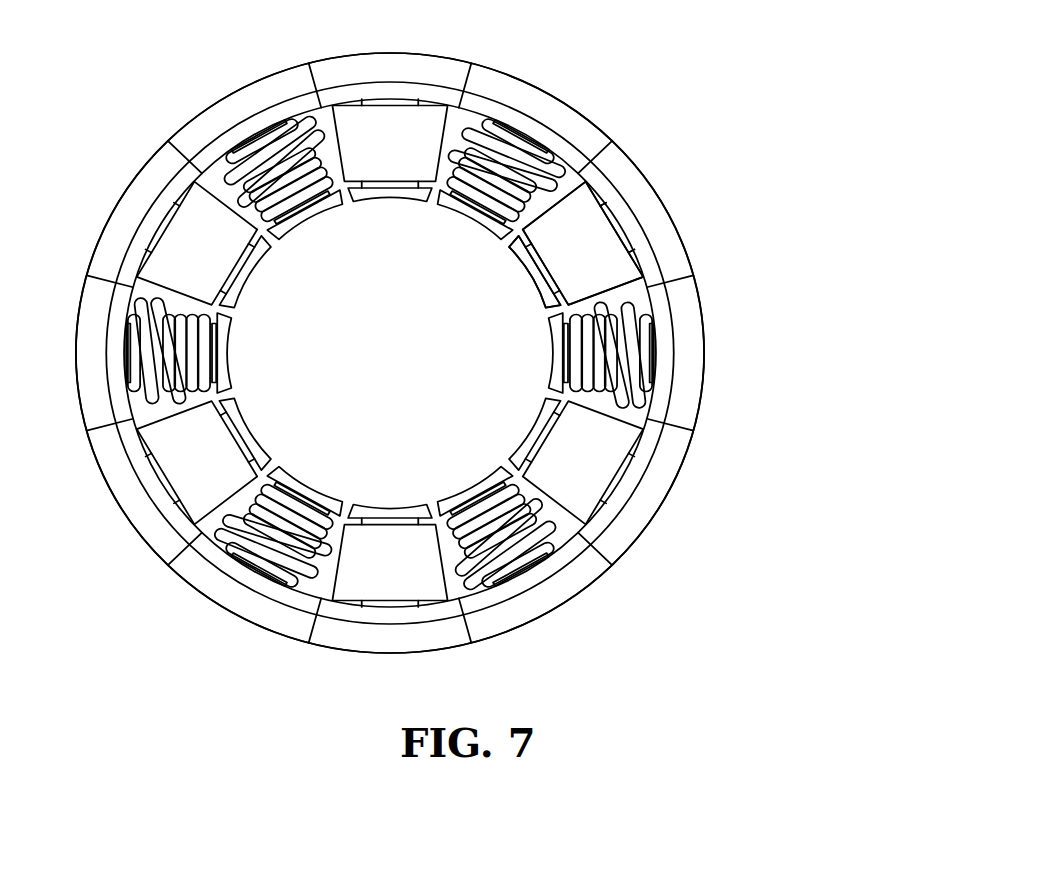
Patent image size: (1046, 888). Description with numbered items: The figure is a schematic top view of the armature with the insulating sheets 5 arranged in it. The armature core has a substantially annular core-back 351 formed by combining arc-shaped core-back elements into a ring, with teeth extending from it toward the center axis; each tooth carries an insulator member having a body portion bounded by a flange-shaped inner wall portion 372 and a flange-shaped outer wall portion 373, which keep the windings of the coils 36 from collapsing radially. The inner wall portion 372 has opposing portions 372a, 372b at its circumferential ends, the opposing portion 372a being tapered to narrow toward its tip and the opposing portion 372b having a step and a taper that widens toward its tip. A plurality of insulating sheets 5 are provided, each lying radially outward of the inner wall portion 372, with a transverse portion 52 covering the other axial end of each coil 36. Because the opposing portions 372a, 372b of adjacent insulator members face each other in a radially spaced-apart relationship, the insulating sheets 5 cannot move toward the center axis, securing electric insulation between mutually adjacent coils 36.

The core-back 351 is at (557, 110).
The outer wall portion 373 is at (572, 143).
The inner wall portion 372 is at (623, 233).
The opposing portion 372a is at (617, 213).
The opposing portion 372b is at (603, 287).
The coil 36 is at (630, 330).
The insulating sheet 5 is at (828, 442).
The transverse portion 52 is at (617, 450).